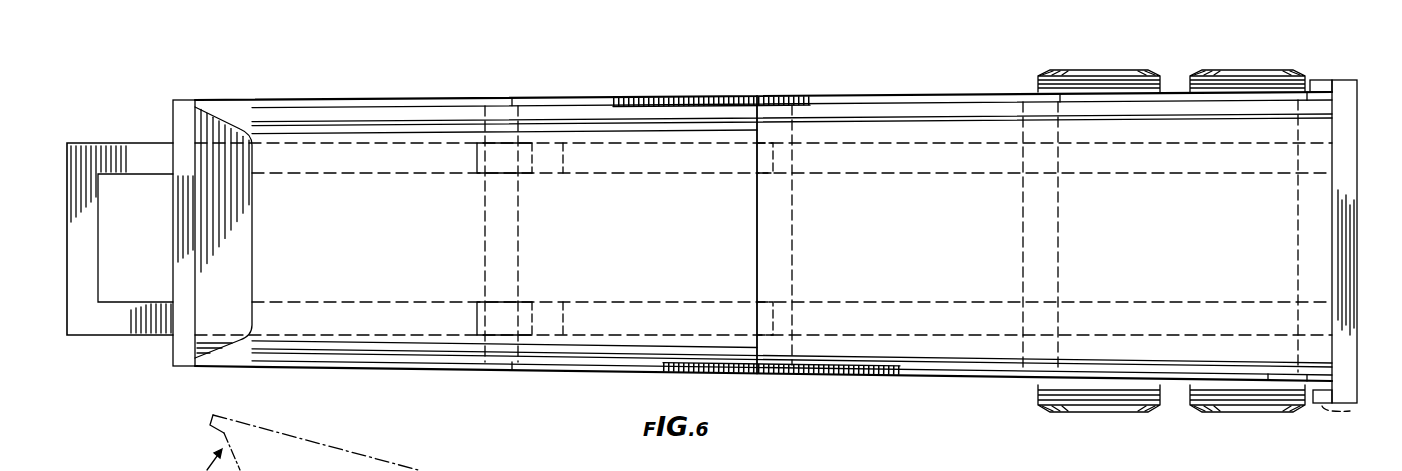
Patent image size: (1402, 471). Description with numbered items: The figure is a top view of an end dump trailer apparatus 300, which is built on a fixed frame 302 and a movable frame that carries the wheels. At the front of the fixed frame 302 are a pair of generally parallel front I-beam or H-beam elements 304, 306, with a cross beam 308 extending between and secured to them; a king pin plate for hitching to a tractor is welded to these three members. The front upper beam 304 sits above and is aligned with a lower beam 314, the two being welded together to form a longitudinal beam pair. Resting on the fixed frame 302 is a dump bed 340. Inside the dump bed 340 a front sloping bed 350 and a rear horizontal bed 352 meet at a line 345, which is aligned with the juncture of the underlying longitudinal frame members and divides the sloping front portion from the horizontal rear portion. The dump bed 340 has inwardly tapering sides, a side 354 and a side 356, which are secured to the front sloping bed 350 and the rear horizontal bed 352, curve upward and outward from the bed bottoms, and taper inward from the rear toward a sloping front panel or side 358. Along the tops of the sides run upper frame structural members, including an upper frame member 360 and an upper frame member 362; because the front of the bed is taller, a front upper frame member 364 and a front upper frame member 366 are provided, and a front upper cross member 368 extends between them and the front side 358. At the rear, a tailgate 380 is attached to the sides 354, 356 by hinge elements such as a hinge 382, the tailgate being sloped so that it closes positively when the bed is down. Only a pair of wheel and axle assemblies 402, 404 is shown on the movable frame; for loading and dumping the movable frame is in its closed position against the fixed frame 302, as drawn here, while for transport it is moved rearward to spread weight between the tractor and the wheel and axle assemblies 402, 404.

The end dump trailer apparatus 300 is at (734, 257).
The fixed frame 302 is at (120, 267).
The front I-beam or H-beam element 304 is at (118, 180).
The front I-beam or H-beam element 306 is at (152, 270).
The cross beam 308 is at (95, 249).
The lower beam 314 is at (866, 178).
The dump bed 340 is at (763, 236).
The line 345 is at (757, 243).
The front sloping bed 350 is at (412, 250).
The rear horizontal bed 352 is at (1189, 254).
The side 354 is at (962, 112).
The side 356 is at (884, 362).
The front panel or side 358 is at (240, 274).
The upper frame member 360 is at (748, 74).
The upper frame member 362 is at (644, 378).
The front upper frame member 364 is at (336, 98).
The front upper frame member 366 is at (412, 370).
The front upper cross member 368 is at (178, 344).
The tailgate 380 is at (1350, 279).
The hinge 382 is at (1344, 425).
The wheel and axle assembly 402 is at (1097, 412).
The wheel and axle assembly 404 is at (1245, 412).